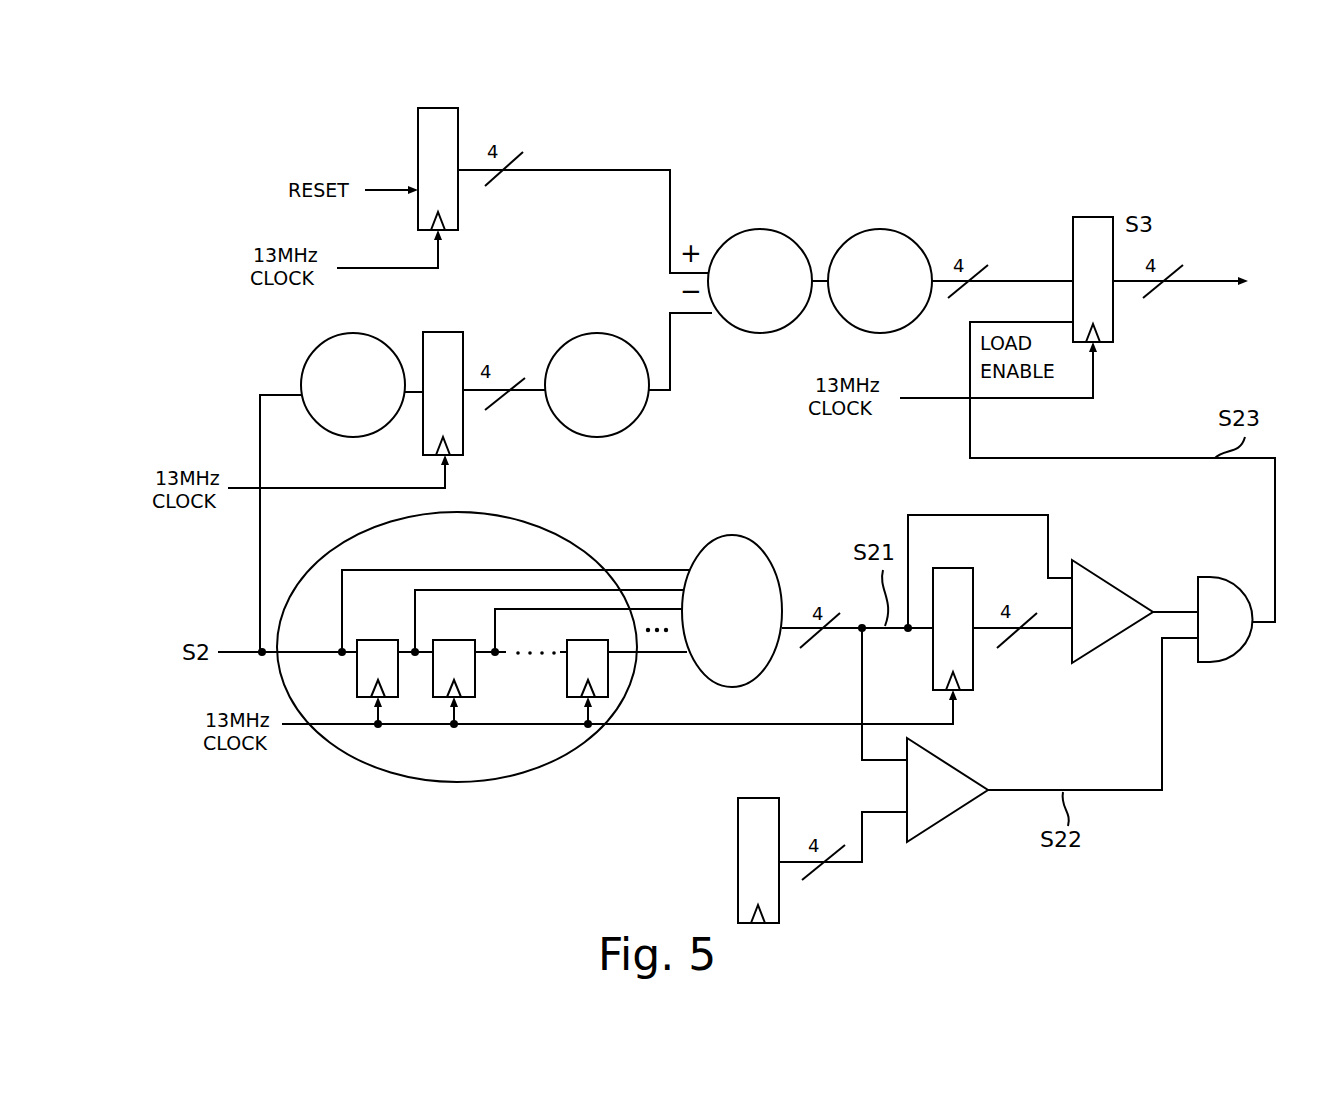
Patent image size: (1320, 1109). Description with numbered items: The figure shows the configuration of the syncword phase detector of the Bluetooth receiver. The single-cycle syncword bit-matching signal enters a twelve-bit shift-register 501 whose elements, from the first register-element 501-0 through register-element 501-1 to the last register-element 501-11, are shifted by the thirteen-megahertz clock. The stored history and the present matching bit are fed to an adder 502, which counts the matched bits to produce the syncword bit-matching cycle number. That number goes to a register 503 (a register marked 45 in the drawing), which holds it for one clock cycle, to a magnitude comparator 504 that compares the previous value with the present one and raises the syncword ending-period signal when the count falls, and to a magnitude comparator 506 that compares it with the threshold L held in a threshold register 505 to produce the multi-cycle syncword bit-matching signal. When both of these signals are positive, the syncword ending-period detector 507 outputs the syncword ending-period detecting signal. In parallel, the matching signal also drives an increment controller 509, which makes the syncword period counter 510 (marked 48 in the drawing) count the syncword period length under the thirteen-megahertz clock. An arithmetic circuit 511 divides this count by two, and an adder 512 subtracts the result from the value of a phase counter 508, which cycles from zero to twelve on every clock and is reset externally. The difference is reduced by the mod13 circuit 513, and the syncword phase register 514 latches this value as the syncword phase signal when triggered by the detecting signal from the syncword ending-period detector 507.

The shift-register 501 is at (565, 533).
The first register-element 501-0 is at (357, 670).
The register-element 501-1 is at (475, 672).
The register-element 501-11 is at (567, 689).
The adder 502 is at (745, 537).
The register 503 is at (984, 615).
The register 45 is at (953, 615).
The magnitude comparator 504 is at (1125, 562).
The threshold register 505 is at (752, 797).
The magnitude comparator 506 is at (958, 770).
The syncword ending-period detector 507 is at (1203, 577).
The phase counter 508 is at (458, 128).
The increment controller 509 is at (302, 377).
The syncword period counter 510 is at (472, 378).
The register 48 is at (443, 379).
The arithmetic circuit 511 is at (590, 333).
The adder 512 is at (745, 230).
The mod13 circuit 513 is at (885, 230).
The syncword phase register 514 is at (1086, 218).